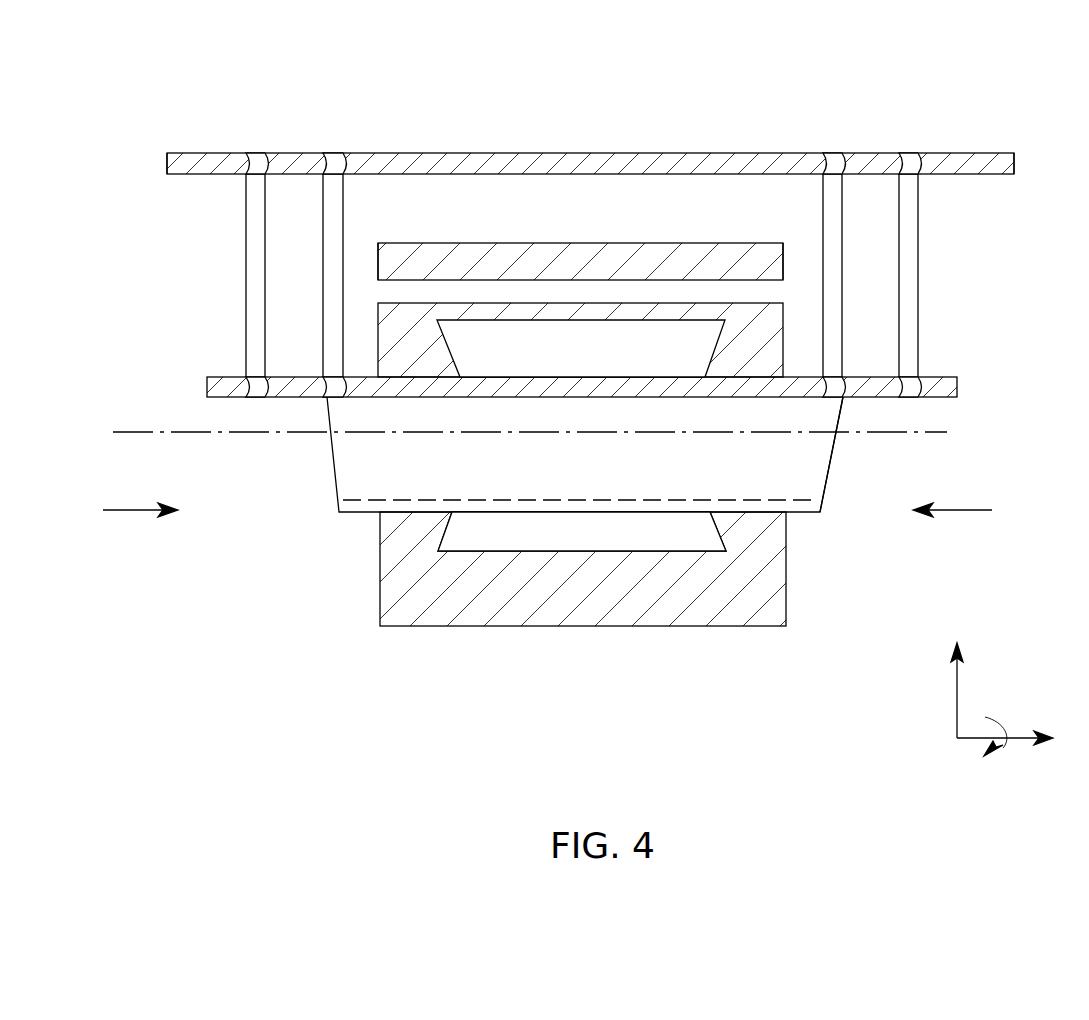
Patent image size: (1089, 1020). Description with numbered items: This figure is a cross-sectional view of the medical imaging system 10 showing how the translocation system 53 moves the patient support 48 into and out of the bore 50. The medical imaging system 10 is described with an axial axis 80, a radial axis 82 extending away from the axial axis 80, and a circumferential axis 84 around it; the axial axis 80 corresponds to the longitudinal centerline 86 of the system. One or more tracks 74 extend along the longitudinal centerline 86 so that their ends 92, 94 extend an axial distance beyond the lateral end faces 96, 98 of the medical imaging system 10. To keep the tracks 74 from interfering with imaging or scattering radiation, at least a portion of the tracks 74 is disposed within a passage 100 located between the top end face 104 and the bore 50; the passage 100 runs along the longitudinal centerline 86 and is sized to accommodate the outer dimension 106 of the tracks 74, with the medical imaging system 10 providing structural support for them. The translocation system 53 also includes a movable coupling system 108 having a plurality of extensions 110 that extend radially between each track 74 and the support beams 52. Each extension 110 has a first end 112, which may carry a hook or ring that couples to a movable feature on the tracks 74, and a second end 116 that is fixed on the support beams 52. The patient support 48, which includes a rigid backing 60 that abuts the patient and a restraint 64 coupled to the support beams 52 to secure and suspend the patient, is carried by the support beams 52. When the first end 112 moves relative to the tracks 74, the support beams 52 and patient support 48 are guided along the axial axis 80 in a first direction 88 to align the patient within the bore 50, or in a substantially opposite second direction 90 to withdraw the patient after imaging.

The medical imaging system 10 is at (800, 118).
The patient support 48 is at (800, 523).
The bore 50 is at (607, 362).
The support beams 52 is at (958, 388).
The translocation system 53 is at (146, 157).
The backing 60 is at (340, 506).
The restraint 64 is at (818, 470).
The tracks 74 is at (952, 163).
The axial axis 80 is at (1018, 742).
The radial axis 82 is at (958, 690).
The circumferential axis 84 is at (998, 716).
The longitudinal centerline 86 is at (122, 430).
The first direction 88 is at (131, 508).
The second direction 90 is at (961, 508).
The track end 92 is at (167, 164).
The track end 94 is at (1015, 164).
The lateral end face 96 is at (378, 261).
The lateral end face 98 is at (784, 262).
The passage 100 is at (374, 303).
The top end face 104 is at (605, 243).
The outer dimension 106 is at (206, 200).
The movable coupling system 108 is at (928, 348).
The extensions 110 is at (247, 343).
The first end 112 is at (257, 164).
The second end 116 is at (258, 394).